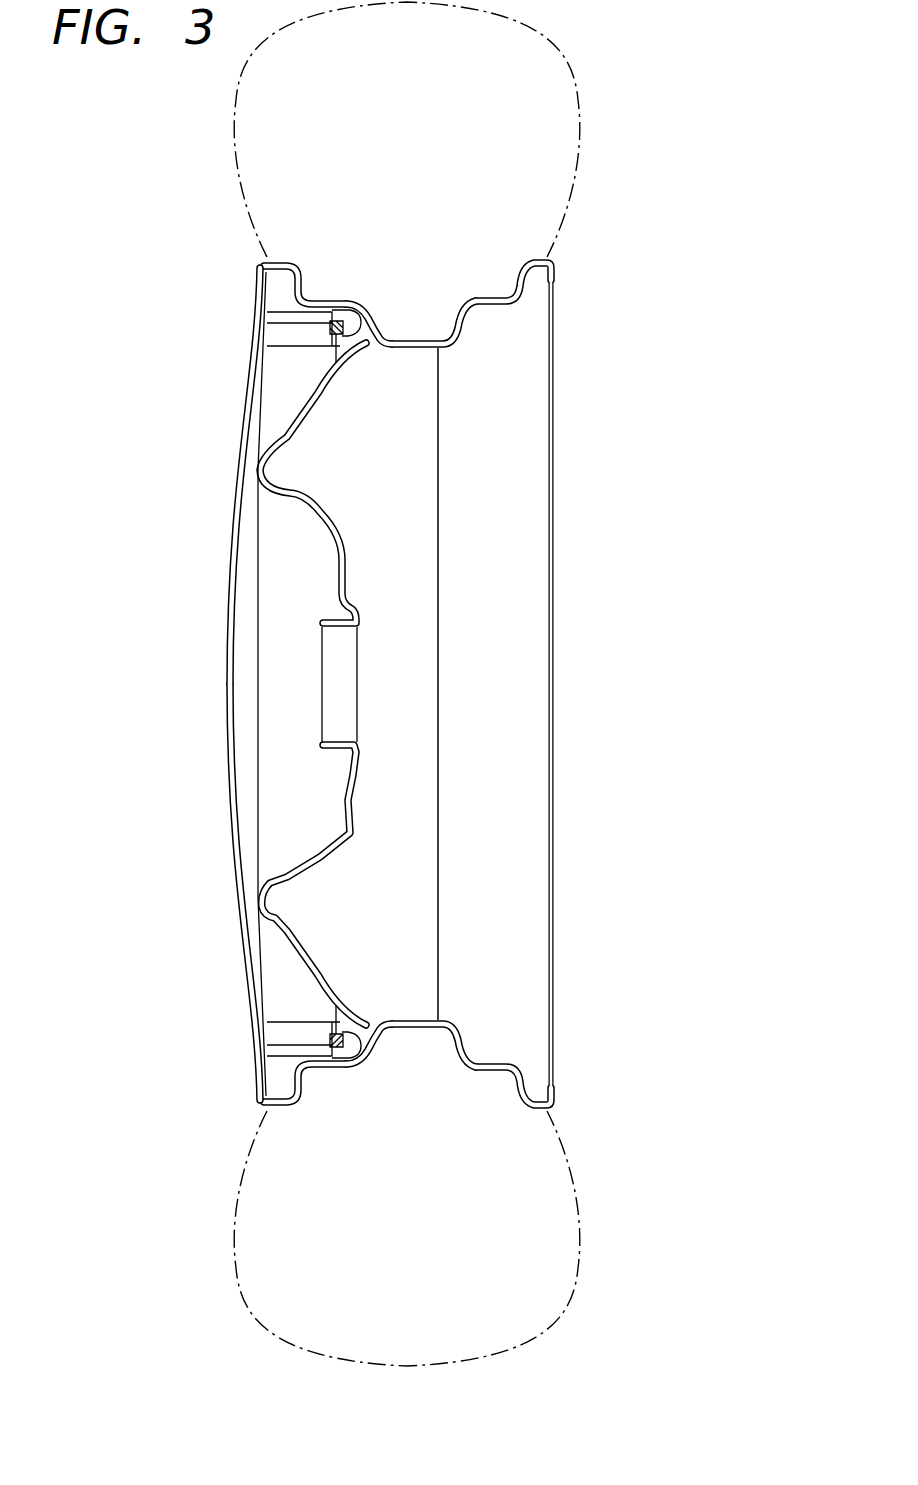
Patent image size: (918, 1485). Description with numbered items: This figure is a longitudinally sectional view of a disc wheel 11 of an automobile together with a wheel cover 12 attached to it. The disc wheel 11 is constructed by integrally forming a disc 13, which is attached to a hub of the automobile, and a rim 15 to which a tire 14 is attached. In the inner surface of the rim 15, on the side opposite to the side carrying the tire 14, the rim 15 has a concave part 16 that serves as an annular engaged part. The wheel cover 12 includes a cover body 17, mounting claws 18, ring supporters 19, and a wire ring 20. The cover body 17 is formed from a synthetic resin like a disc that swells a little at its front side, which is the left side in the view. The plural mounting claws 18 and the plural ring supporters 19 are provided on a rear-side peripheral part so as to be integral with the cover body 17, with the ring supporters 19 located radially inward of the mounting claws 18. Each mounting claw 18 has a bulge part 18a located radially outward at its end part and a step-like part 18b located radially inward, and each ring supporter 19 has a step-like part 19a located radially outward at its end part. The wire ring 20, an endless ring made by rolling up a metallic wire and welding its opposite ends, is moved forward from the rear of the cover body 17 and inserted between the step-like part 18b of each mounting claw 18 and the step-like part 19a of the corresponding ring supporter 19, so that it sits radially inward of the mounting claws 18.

The disc wheel 11 is at (460, 678).
The wheel cover 12 is at (283, 693).
The disc 13 is at (343, 530).
The tire 14 is at (228, 130).
The rim 15 is at (476, 296).
The concave part 16 is at (362, 298).
The cover body 17 is at (232, 525).
The mounting claw 18 is at (357, 678).
The bulge part 18a is at (346, 300).
The step-like part 18b is at (360, 350).
The ring supporter 19 is at (303, 337).
The step-like part 19a is at (320, 302).
The wire ring 20 is at (337, 345).